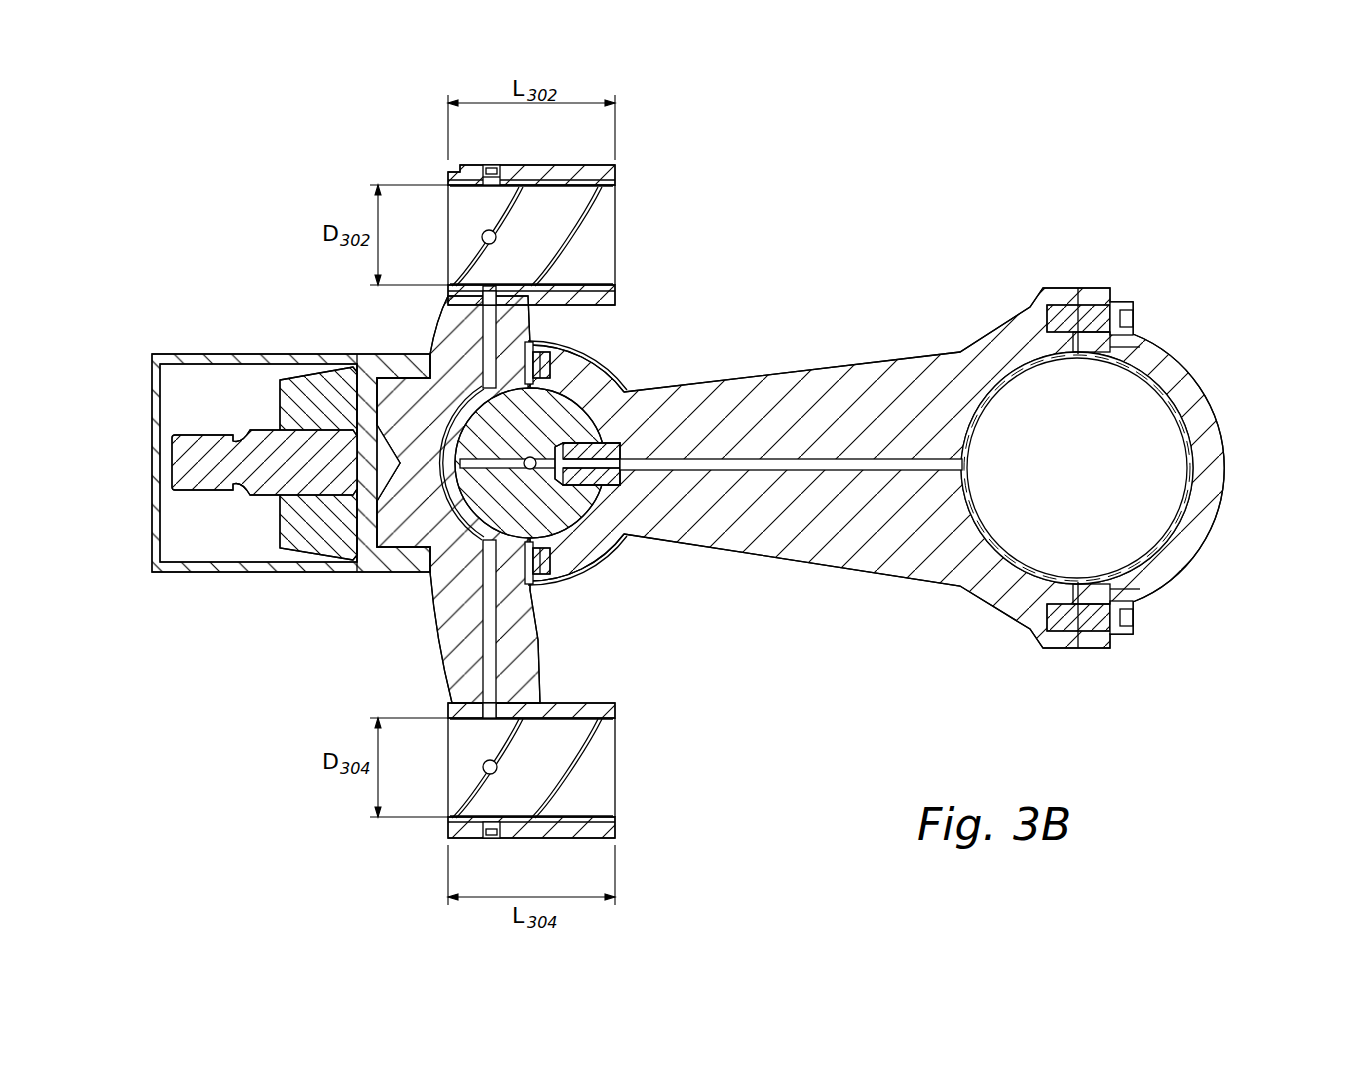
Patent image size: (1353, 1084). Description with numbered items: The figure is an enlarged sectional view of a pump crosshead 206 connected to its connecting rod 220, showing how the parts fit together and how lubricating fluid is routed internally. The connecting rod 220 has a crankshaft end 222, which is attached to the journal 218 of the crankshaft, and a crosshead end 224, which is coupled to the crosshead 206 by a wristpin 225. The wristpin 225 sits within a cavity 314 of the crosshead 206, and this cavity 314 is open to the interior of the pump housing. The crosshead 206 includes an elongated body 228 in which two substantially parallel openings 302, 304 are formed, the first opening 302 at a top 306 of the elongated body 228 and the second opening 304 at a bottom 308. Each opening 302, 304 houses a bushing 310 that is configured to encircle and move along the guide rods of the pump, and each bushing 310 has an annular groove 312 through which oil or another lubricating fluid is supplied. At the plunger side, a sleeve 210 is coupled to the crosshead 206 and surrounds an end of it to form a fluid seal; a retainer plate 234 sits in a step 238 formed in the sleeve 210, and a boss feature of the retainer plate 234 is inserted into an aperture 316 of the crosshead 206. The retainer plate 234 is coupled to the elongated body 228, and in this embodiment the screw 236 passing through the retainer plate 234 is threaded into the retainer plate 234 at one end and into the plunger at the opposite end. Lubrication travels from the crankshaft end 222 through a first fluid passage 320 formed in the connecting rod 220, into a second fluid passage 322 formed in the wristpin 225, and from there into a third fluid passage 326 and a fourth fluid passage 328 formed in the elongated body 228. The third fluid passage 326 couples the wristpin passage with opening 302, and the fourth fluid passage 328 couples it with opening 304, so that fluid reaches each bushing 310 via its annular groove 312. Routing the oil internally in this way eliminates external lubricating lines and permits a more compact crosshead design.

The crosshead 206 is at (556, 163).
The sleeve 210 is at (228, 354).
The journal 218 is at (1187, 380).
The connecting rod 220 is at (797, 565).
The crankshaft end 222 is at (1190, 555).
The crosshead end 224 is at (610, 346).
The wristpin 225 is at (565, 510).
The elongated body 228 is at (460, 655).
The retainer plate 234 is at (283, 397).
The screw 236 is at (210, 490).
The step 238 is at (376, 354).
The opening 302 is at (584, 208).
The opening 304 is at (583, 800).
The top 306 is at (492, 165).
The bottom 308 is at (525, 840).
The bushing 310 is at (600, 284).
The annular groove 312 is at (500, 285).
The cavity 314 is at (552, 392).
The aperture 316 is at (389, 470).
The first fluid passage 320 is at (697, 460).
The second fluid passage 322 is at (490, 458).
The third fluid passage 326 is at (490, 324).
The fourth fluid passage 328 is at (492, 655).